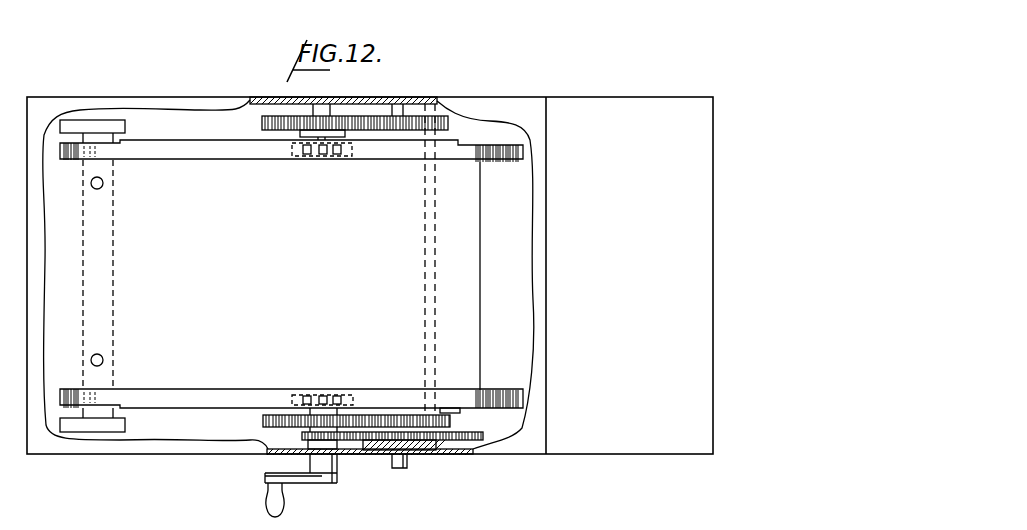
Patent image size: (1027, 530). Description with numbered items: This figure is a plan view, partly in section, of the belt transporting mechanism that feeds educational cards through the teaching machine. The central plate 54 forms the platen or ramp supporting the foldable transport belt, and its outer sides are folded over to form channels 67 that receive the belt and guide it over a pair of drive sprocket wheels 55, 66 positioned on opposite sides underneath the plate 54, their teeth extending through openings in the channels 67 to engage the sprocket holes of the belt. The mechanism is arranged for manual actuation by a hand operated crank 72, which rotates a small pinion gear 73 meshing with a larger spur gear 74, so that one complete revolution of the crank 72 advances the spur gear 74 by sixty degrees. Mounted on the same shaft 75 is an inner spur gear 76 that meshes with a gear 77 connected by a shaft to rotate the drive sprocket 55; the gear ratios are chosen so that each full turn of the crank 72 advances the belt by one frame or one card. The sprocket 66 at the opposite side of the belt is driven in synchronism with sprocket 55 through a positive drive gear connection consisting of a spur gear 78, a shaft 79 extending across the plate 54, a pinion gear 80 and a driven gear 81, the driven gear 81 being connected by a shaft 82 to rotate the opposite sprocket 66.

The plate 54 is at (242, 285).
The drive sprocket wheel 55 is at (310, 394).
The drive sprocket wheel 66 is at (312, 158).
The channel 67 is at (157, 150).
The hand operated crank 72 is at (262, 486).
The pinion gear 73 is at (300, 437).
The spur gear 74 is at (462, 443).
The shaft 75 is at (396, 468).
The inner spur gear 76 is at (391, 432).
The gear 77 is at (273, 412).
The spur gear 78 is at (445, 410).
The shaft 79 is at (433, 246).
The pinion gear 80 is at (431, 103).
The driven gear 81 is at (352, 118).
The shaft 82 is at (312, 110).